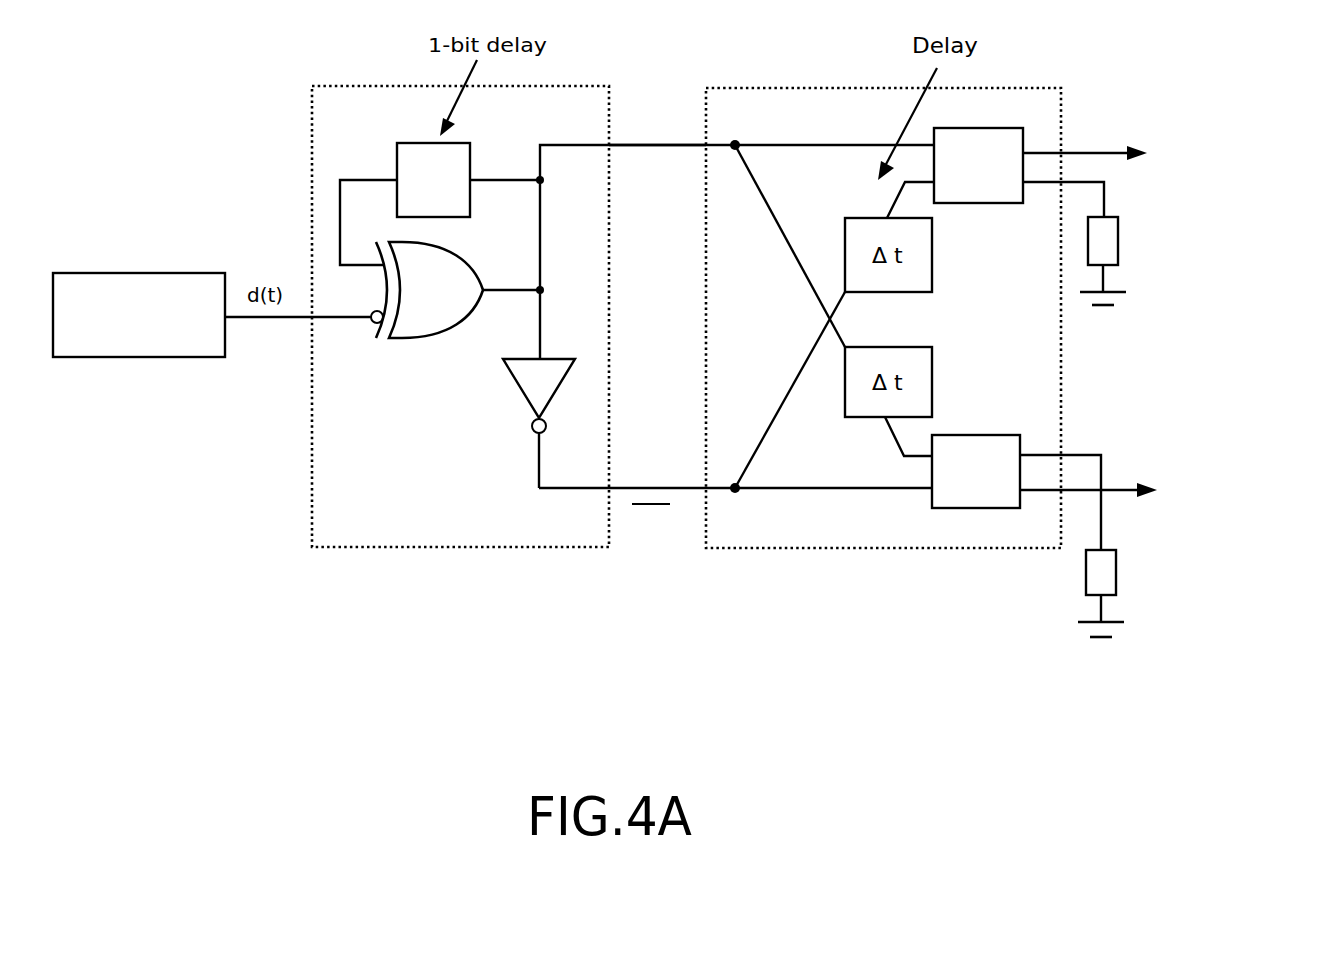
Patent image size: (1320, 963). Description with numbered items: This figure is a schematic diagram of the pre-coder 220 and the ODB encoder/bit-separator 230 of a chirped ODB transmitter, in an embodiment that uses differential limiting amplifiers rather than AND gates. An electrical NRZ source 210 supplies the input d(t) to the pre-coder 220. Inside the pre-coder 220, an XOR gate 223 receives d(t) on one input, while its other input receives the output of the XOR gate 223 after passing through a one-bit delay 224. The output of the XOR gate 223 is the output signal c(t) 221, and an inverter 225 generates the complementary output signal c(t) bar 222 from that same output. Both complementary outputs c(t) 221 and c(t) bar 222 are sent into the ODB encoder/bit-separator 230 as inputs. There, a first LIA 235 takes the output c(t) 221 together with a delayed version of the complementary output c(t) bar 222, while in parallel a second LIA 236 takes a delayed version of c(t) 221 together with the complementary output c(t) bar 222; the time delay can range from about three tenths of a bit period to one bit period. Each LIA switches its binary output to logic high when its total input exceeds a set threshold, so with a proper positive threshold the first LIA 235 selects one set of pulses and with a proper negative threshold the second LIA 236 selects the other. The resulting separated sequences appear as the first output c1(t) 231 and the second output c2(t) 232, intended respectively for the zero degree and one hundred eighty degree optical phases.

The NRZ source 210 is at (158, 344).
The pre-coder 220 is at (580, 534).
The output signal c(t) 221 is at (650, 92).
The complementary output signal c(t) bar 222 is at (647, 545).
The XOR gate 223 is at (454, 316).
The one-bit delay 224 is at (454, 207).
The inverter 225 is at (568, 373).
The ODB encoder/bit-separator 230 is at (775, 537).
The first output c1(t) 231 is at (1112, 105).
The second output c2(t) 232 is at (1195, 475).
The first LIA 235 is at (999, 194).
The second LIA 236 is at (997, 501).